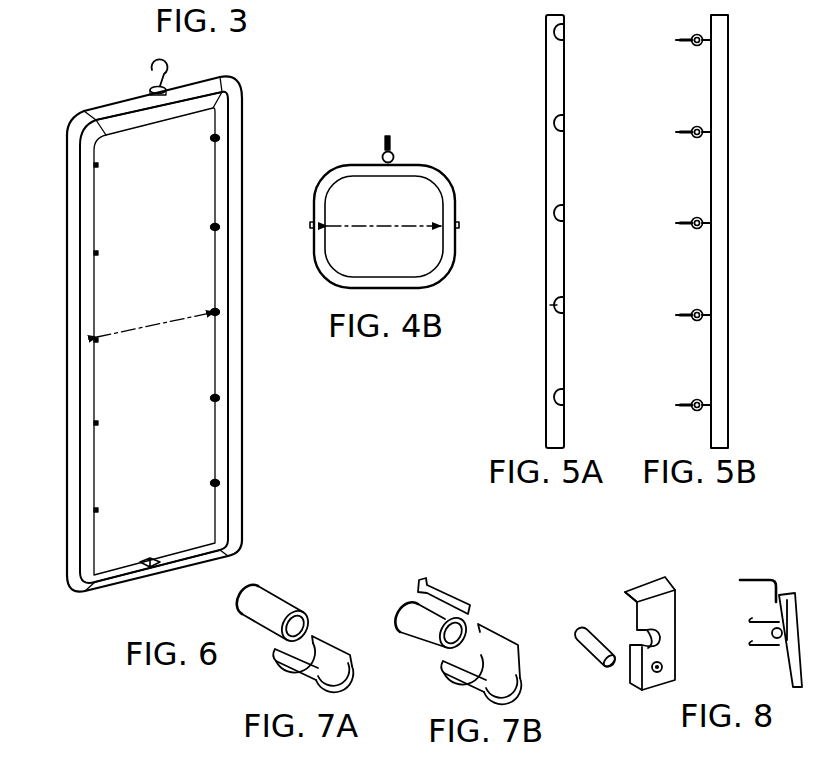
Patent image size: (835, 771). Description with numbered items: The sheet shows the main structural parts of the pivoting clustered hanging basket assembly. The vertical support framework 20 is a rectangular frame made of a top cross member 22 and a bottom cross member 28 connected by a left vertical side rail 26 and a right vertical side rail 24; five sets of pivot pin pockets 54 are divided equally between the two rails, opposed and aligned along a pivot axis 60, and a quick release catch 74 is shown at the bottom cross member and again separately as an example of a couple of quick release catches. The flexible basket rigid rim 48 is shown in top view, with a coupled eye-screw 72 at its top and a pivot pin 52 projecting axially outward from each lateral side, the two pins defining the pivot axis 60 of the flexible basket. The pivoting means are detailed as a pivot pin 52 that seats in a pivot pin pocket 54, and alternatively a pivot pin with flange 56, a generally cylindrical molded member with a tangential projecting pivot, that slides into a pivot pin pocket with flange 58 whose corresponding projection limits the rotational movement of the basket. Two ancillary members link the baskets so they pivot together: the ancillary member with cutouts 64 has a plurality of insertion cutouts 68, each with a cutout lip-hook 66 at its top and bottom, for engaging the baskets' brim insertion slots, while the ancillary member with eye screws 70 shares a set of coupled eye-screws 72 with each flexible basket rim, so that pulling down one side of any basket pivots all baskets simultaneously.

In FIG. 6, the vertical support framework 20 is at (245, 85).
In FIG. 6, the top cross member 22 is at (112, 95).
In FIG. 6, the right vertical side rail 24 is at (243, 447).
In FIG. 6, the left vertical side rail 26 is at (68, 388).
In FIG. 6, the bottom cross member 28 is at (122, 595).
In FIG. 4B, the flexible basket rigid rim 48 is at (425, 162).
In FIG. 4B, the pivot pin 52 is at (458, 224).
In FIG. 7A, the pivot pin 52 is at (280, 590).
In FIG. 6, the pivot pin pocket 54 is at (222, 140).
In FIG. 7A, the pivot pin pocket 54 is at (330, 642).
In FIG. 7B, the pivot pin with flange 56 is at (450, 592).
In FIG. 7B, the pivot pin pocket with flange 58 is at (495, 641).
In FIG. 6, the pivot axis 60 is at (183, 317).
In FIG. 4B, the pivot axis 60 is at (392, 232).
In FIG. 5A, the ancillary member with cutouts 64 is at (566, 92).
In FIG. 5A, the cutout lip-hook 66 is at (563, 213).
In FIG. 5A, the insertion cutout 68 is at (565, 305).
In FIG. 5B, the ancillary member with eye screws 70 is at (710, 108).
In FIG. 4B, the coupled eye-screws 72 is at (392, 143).
In FIG. 5B, the coupled eye-screws 72 is at (695, 312).
In FIG. 6, the quick release catch 74 is at (160, 565).
In FIG. 8, the quick release catch 74 is at (625, 592).